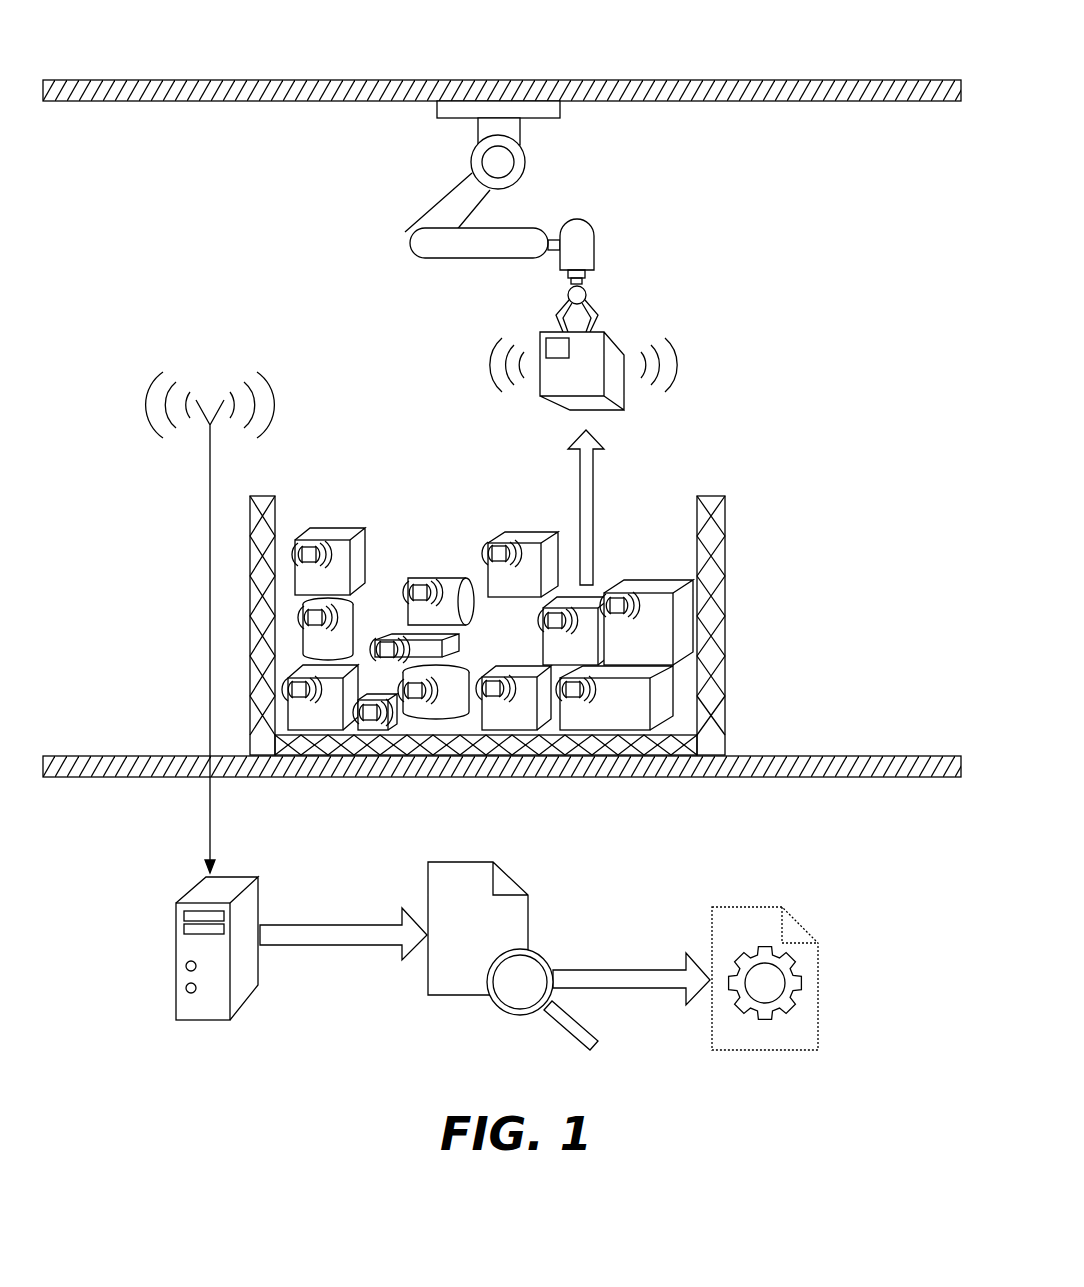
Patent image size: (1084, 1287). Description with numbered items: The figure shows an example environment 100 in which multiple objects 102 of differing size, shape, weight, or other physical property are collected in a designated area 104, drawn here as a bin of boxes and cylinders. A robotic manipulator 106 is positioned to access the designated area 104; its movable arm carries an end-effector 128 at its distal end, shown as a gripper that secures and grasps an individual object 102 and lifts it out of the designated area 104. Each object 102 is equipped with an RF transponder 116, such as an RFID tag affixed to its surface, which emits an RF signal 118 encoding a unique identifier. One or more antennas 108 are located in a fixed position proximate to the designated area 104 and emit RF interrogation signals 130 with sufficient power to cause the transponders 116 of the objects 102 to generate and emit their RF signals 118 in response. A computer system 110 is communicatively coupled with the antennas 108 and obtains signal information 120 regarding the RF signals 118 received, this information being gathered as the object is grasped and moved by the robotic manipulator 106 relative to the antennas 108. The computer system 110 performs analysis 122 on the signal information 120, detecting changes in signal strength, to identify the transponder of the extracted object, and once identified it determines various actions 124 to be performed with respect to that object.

The environment 100 is at (180, 49).
The objects 102 is at (358, 535).
The designated area 104 is at (352, 376).
The robotic manipulator 106 is at (605, 202).
The antennas 108 is at (203, 420).
The computer system 110 is at (176, 952).
The RF transponder 116 is at (305, 547).
The RF signal 118 is at (331, 552).
The signal information 120 is at (480, 861).
The analysis 122 is at (557, 1030).
The actions 124 is at (756, 906).
The end-effector 128 is at (600, 305).
The RF interrogation signals 130 is at (272, 370).